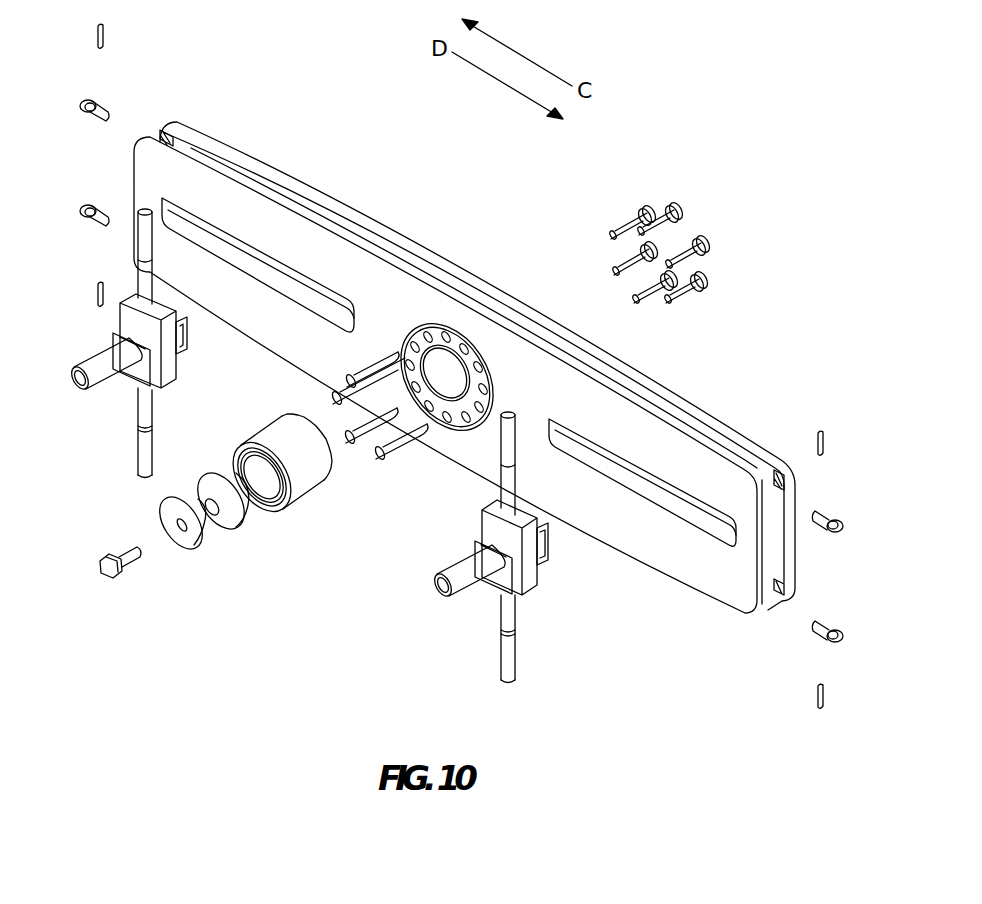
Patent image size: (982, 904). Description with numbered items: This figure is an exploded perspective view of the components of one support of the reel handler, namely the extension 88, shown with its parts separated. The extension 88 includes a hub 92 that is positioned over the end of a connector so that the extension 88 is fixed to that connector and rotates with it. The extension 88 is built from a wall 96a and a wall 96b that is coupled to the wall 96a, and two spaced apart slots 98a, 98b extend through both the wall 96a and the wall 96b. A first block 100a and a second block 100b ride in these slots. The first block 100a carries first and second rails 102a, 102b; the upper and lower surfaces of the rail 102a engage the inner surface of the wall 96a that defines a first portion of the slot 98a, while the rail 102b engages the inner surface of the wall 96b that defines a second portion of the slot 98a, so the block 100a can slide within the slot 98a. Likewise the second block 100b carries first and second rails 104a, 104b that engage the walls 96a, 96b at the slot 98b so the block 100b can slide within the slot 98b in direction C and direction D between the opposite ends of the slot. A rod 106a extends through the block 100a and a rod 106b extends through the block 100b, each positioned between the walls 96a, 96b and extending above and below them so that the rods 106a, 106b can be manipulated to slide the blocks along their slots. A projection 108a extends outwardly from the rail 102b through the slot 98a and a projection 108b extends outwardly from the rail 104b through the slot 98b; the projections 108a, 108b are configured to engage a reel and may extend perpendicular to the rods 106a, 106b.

The extension 88 is at (423, 191).
The hub 92 is at (282, 531).
The wall 96a is at (290, 176).
The wall 96b is at (150, 162).
The slot 98a is at (281, 294).
The slot 98b is at (687, 530).
The first block 100a is at (122, 347).
The second block 100b is at (490, 549).
The first rail 102a is at (178, 340).
The second rail 102b is at (140, 370).
The first rail 104a is at (548, 545).
The second rail 104b is at (500, 578).
The rod 106a is at (138, 450).
The rod 106b is at (516, 655).
The projection 108a is at (100, 363).
The projection 108b is at (460, 572).